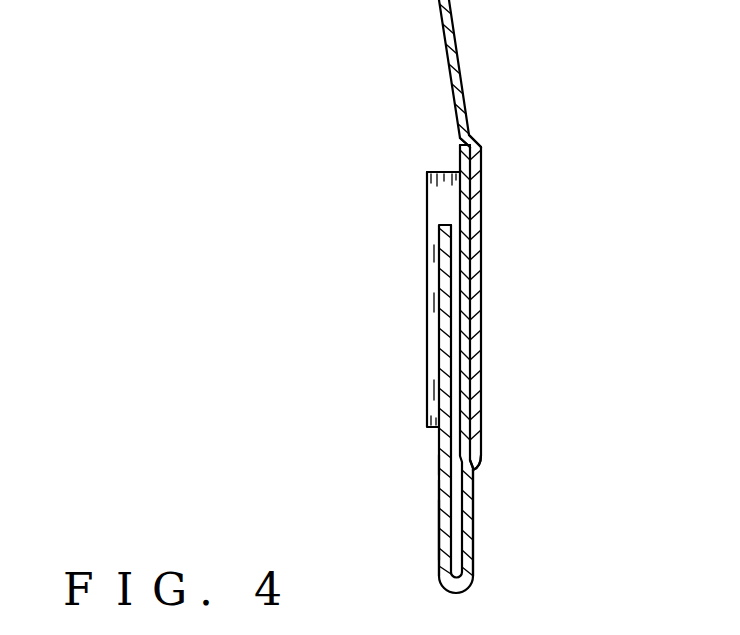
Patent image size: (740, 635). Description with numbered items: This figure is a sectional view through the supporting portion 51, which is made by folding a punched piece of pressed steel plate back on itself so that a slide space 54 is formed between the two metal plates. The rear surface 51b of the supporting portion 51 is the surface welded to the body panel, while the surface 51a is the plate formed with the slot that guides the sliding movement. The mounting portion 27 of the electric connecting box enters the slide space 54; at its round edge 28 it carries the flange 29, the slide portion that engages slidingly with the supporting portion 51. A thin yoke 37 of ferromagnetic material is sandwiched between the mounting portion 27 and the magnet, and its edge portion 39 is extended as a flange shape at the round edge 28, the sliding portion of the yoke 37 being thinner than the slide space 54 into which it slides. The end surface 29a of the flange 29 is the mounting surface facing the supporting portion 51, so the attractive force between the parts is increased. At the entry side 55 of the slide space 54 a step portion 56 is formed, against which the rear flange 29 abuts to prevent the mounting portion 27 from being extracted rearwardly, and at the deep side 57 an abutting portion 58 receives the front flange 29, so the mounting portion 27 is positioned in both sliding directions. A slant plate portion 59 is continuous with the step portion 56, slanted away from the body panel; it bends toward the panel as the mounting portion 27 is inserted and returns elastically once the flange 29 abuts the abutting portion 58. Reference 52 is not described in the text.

The slant plate portion 59 is at (447, 53).
The step portion 56 is at (457, 137).
The round edge 28 is at (443, 173).
The entry side 55 is at (452, 217).
The mounting portion 27 is at (428, 273).
The slide space 54 is at (452, 360).
The edge portion 39 is at (452, 442).
The deep side 57 is at (443, 465).
The surface 51a is at (438, 535).
The flange 29 is at (481, 160).
The end surface 29a is at (481, 168).
The yoke 37 is at (472, 299).
The abutting portion 58 is at (473, 468).
The right wall of pin 52 is at (473, 503).
The supporting portion 51 is at (473, 527).
The rear surface 51b is at (471, 570).